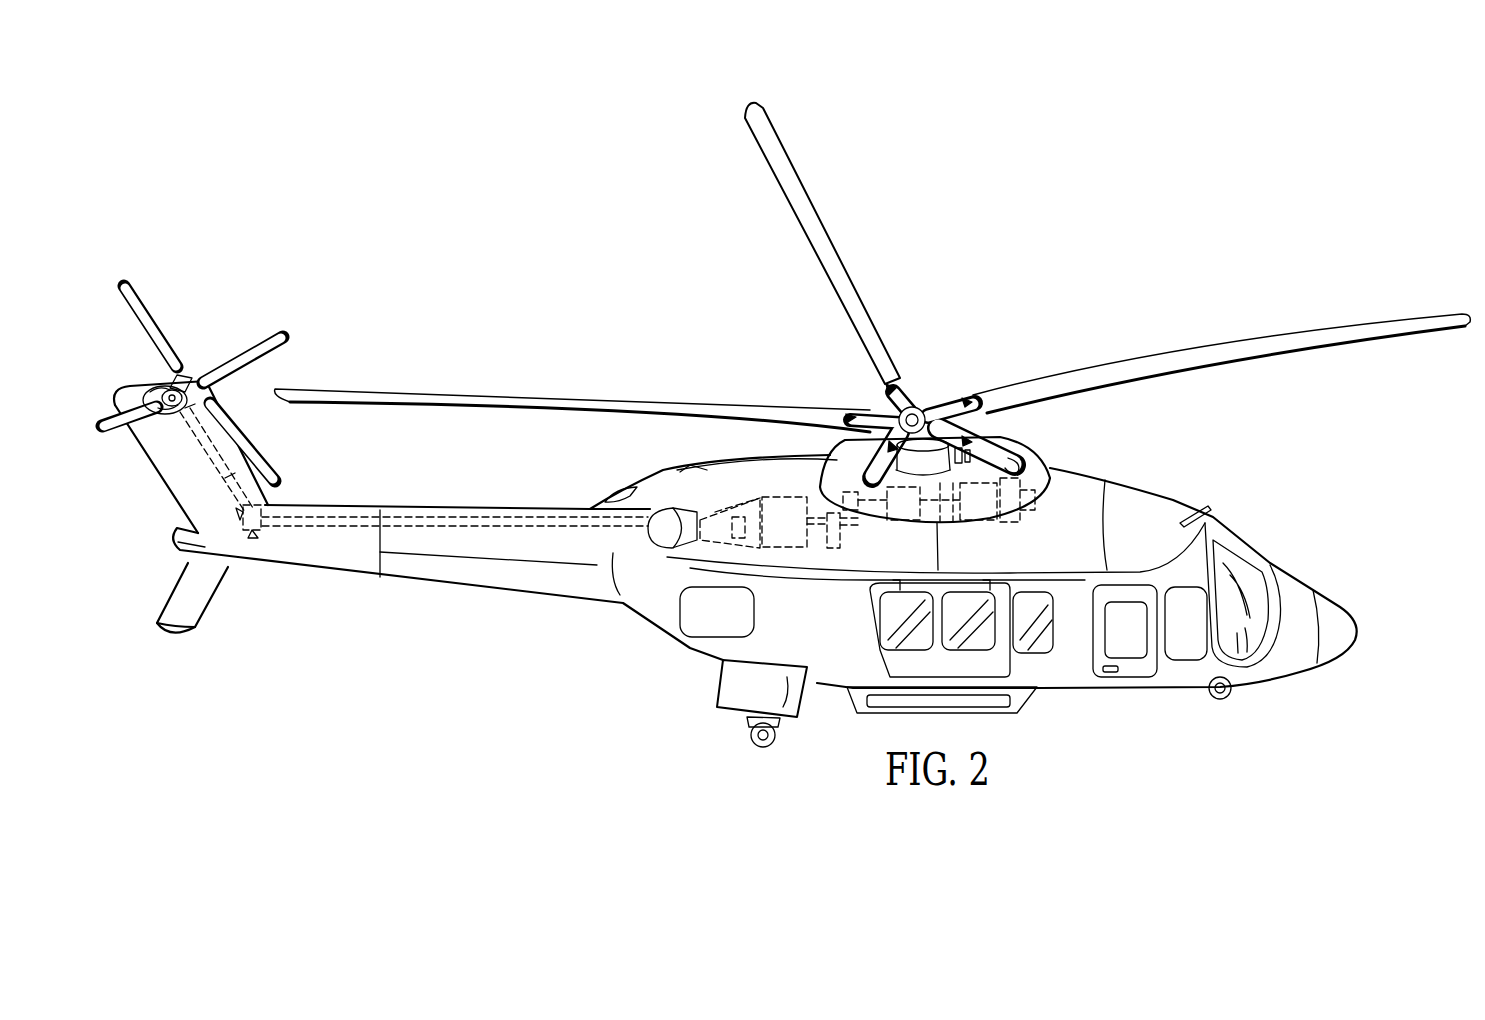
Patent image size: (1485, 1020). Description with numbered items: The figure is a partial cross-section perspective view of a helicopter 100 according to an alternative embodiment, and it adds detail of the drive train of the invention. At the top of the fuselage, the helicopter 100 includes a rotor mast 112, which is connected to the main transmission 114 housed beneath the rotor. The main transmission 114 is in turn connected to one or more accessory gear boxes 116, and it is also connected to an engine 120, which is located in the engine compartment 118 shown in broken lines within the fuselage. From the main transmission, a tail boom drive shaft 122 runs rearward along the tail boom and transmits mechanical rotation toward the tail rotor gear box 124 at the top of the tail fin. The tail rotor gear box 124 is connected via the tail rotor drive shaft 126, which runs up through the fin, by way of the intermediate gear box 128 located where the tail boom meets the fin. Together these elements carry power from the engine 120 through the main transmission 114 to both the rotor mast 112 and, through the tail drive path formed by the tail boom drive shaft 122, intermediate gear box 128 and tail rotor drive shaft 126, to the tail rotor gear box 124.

The helicopter 100 is at (1150, 152).
The rotor mast 112 is at (938, 410).
The main transmission 114 is at (927, 517).
The accessory gear boxes 116 is at (987, 500).
The engine compartment 118 is at (796, 487).
The engine 120 is at (772, 533).
The tail boom drive shaft 122 is at (467, 515).
The tail rotor gear box 124 is at (147, 377).
The tail rotor drive shaft 126 is at (233, 457).
The intermediate gear box 128 is at (243, 530).